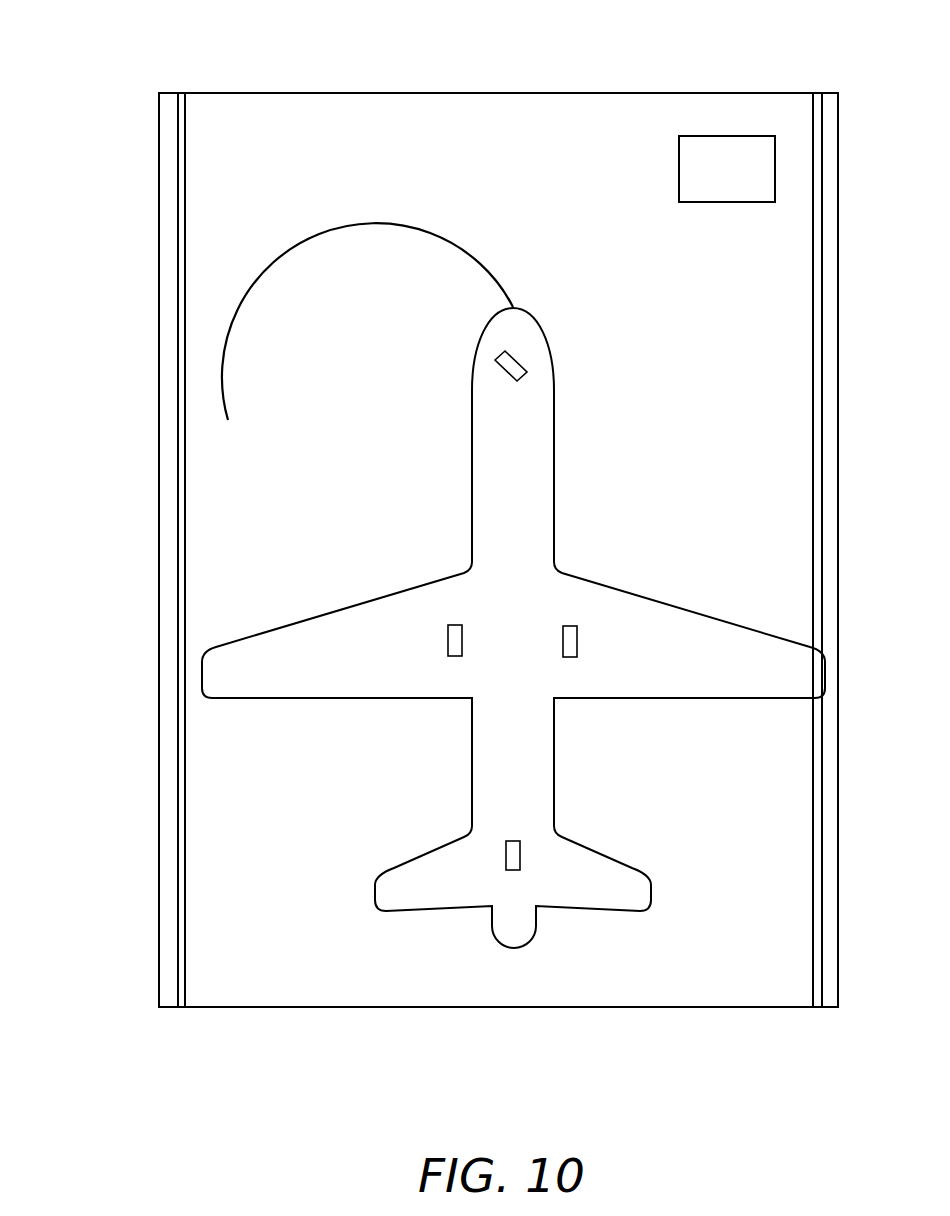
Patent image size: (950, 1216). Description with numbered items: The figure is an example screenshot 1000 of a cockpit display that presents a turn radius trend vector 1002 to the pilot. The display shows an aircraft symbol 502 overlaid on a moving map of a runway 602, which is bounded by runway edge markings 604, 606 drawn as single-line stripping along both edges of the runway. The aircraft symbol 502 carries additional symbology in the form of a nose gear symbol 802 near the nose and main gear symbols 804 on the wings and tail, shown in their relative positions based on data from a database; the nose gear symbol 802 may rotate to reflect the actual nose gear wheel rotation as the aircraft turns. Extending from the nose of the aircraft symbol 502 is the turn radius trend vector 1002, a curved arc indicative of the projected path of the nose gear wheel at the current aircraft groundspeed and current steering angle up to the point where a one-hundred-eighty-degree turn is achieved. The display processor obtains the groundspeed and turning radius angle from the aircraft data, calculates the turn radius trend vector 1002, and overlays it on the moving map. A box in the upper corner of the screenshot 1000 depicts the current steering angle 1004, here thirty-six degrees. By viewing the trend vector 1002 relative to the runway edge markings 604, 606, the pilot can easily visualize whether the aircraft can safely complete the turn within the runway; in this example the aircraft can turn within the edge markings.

The screenshot 1000 is at (122, 58).
The runway 602 is at (754, 106).
The runway edge marking 604 is at (182, 577).
The runway edge marking 606 is at (818, 401).
The current steering angle 1004 is at (679, 170).
The turn radius trend vector 1002 is at (337, 218).
The aircraft symbol 502 is at (679, 608).
The nose gear symbol 802 is at (517, 383).
The main gear symbol 804 is at (578, 640).